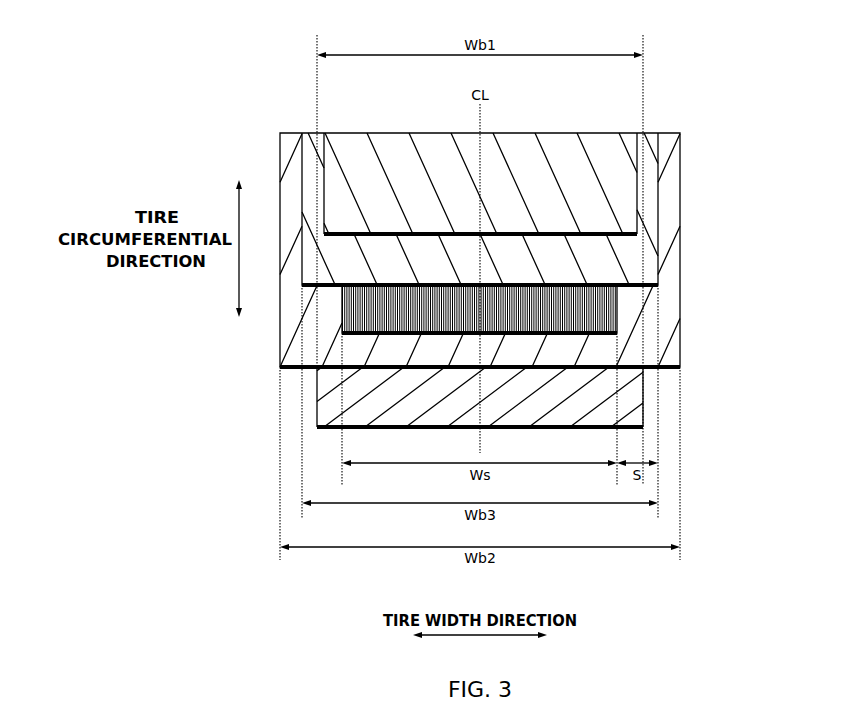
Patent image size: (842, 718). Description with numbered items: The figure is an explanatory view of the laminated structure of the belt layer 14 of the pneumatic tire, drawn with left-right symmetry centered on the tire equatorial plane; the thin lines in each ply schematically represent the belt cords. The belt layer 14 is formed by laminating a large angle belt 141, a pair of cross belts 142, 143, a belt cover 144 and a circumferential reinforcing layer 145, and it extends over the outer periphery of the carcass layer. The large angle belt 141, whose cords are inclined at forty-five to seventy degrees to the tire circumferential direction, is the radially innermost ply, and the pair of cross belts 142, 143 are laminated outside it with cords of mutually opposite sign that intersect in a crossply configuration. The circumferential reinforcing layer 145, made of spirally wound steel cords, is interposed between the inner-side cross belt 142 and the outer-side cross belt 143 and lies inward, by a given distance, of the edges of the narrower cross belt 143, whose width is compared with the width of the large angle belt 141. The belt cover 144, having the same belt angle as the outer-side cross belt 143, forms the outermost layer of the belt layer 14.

The belt layer 14 is at (676, 111).
The large angle belt 141 is at (644, 397).
The inner-side cross belt 142 is at (682, 346).
The outer-side cross belt 143 is at (660, 265).
The belt cover 144 is at (638, 213).
The circumferential reinforcing layer 145 is at (619, 312).